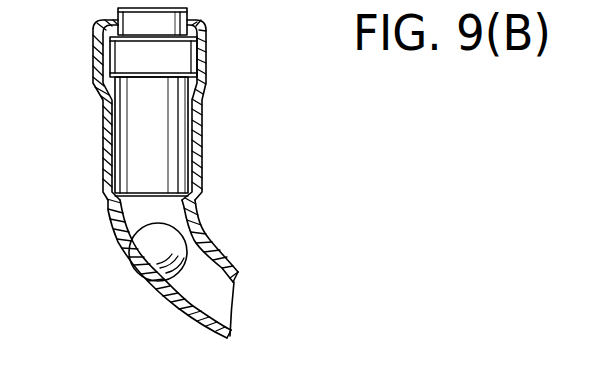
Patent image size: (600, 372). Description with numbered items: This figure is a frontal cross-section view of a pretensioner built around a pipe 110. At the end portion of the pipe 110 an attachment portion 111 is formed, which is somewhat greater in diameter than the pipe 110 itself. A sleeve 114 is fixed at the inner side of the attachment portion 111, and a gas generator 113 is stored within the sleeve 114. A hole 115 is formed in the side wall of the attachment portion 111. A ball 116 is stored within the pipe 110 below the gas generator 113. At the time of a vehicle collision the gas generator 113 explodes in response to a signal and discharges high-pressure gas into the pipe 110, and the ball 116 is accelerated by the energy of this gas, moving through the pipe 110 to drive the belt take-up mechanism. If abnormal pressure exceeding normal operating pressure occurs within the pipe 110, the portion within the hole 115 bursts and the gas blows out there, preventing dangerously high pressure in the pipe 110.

The pipe 110 is at (208, 243).
The attachment portion 111 is at (205, 60).
The gas generator 113 is at (162, 52).
The sleeve 114 is at (168, 108).
The hole 115 is at (196, 143).
The ball 116 is at (147, 253).